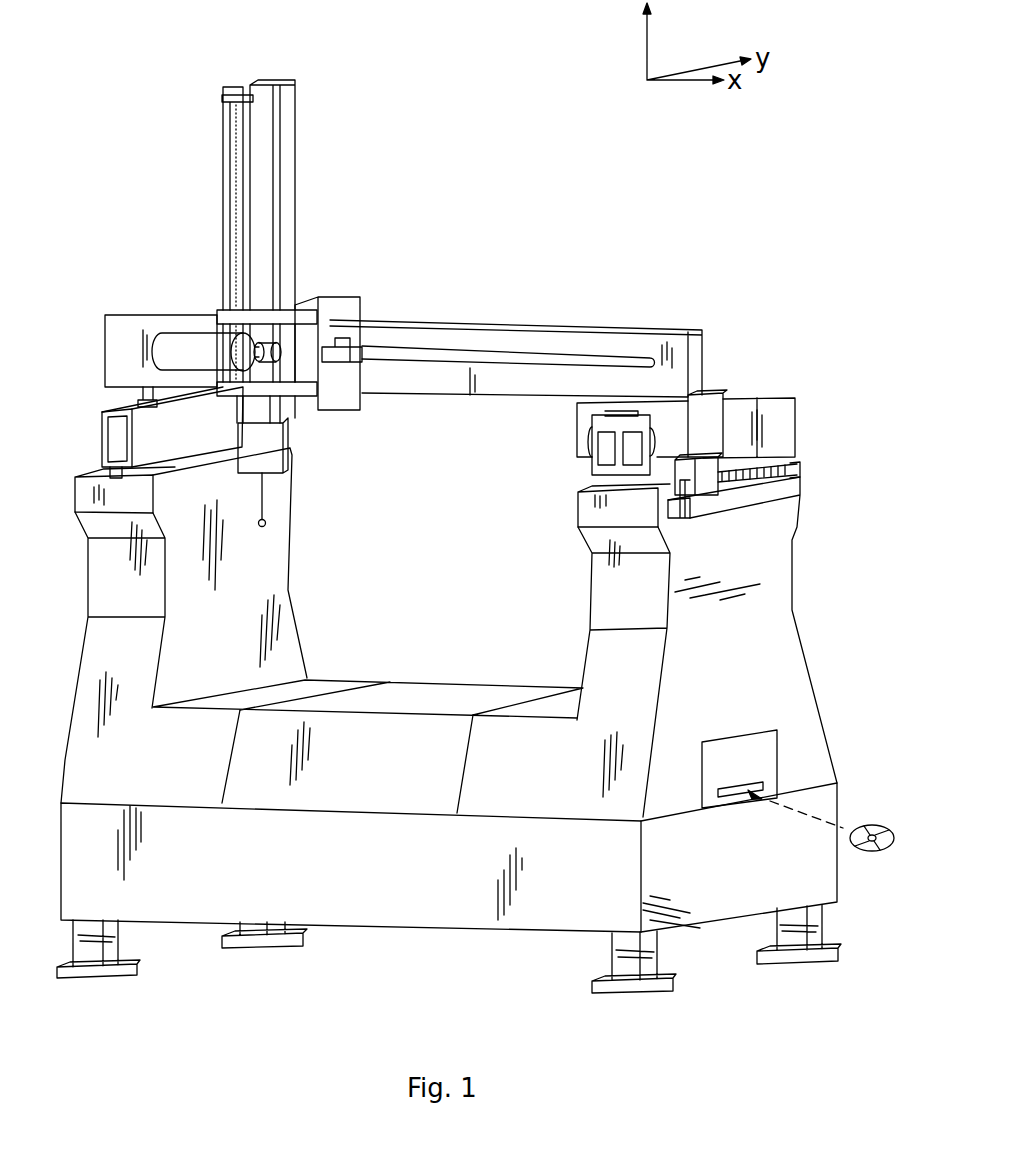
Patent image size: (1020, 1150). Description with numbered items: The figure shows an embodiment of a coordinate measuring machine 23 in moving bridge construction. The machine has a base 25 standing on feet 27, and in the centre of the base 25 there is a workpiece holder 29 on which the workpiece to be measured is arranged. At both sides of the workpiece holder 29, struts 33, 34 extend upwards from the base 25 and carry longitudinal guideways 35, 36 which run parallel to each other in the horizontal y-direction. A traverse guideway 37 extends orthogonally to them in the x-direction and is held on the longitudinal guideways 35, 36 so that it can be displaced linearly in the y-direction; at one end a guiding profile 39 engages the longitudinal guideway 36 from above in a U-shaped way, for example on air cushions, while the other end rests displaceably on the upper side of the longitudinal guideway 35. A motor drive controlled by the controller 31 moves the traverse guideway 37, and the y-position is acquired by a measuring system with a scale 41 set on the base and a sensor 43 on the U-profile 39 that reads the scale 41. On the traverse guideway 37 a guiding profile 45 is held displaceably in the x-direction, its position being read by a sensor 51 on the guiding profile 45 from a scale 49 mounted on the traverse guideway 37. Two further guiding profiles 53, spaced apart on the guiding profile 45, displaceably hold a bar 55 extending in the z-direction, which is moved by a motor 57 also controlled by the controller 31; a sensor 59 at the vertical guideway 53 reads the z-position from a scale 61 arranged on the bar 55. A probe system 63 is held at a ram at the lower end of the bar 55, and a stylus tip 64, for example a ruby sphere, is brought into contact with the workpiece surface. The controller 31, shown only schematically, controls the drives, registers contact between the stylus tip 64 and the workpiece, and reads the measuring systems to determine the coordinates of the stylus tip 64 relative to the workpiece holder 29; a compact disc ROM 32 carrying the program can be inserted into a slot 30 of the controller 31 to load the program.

The coordinate measuring machine 23 is at (470, 150).
The base 25 is at (445, 932).
The feet 27 is at (88, 957).
The workpiece holder 29 is at (417, 695).
The slot 30 is at (728, 795).
The controller 31 is at (778, 763).
The compact disc ROM 32 is at (873, 851).
The strut 33 is at (290, 585).
The strut 34 is at (780, 567).
The longitudinal guideway 35 is at (100, 442).
The longitudinal guideway 36 is at (783, 422).
The traverse guideway 37 is at (493, 333).
The guiding profile 39 is at (710, 403).
The scale 41 is at (803, 471).
The sensor 43 is at (707, 490).
The guiding profile 45 is at (337, 307).
The scale 49 is at (447, 348).
The sensor 51 is at (347, 337).
The guiding profiles 53 is at (225, 316).
The bar 55 is at (288, 123).
The motor 57 is at (170, 342).
The sensor 59 is at (250, 300).
The scale 61 is at (223, 170).
The probe system 63 is at (292, 480).
The stylus tip 64 is at (268, 521).